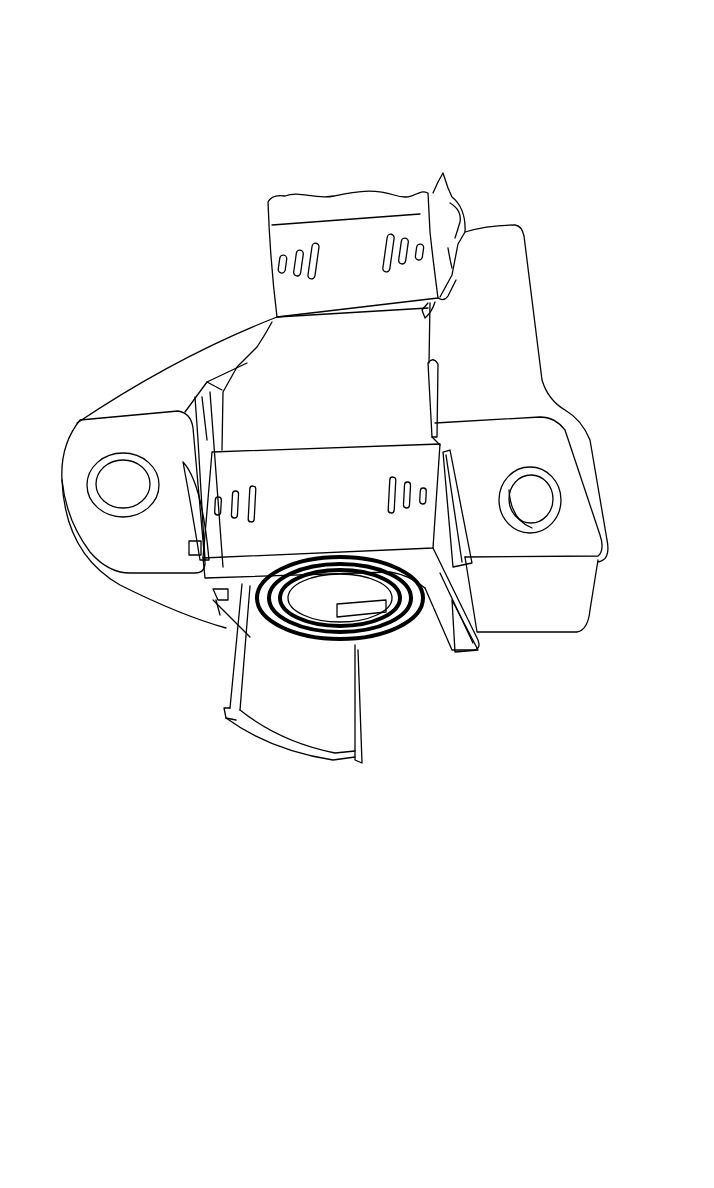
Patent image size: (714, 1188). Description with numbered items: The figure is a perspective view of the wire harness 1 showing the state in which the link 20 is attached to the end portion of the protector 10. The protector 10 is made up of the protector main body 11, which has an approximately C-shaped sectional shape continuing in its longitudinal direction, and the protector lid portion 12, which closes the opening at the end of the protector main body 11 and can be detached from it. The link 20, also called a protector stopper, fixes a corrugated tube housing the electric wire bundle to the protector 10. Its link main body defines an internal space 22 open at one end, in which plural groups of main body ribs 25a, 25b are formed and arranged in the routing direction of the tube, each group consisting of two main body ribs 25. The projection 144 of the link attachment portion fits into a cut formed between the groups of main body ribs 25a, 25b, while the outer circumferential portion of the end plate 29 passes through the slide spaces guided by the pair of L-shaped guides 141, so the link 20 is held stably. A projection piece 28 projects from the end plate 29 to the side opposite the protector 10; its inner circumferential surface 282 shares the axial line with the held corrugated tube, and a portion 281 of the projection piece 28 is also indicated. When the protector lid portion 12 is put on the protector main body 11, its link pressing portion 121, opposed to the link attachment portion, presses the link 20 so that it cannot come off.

The wire harness 1 is at (150, 203).
The protector 10 is at (550, 82).
The protector main body 11 is at (527, 259).
The protector lid portion 12 is at (378, 188).
The link pressing portion 121 is at (231, 546).
The guide 141 is at (231, 628).
The projection 144 is at (350, 610).
The link 20 is at (451, 742).
The internal space 22 is at (323, 602).
The main body rib 25 is at (344, 608).
The group of main body ribs 25a is at (387, 618).
The group of main body ribs 25b is at (328, 565).
The projection piece 28 is at (244, 745).
The hood flange 281 is at (227, 712).
The inner circumferential surface 282 is at (275, 730).
The end plate 29 is at (436, 644).